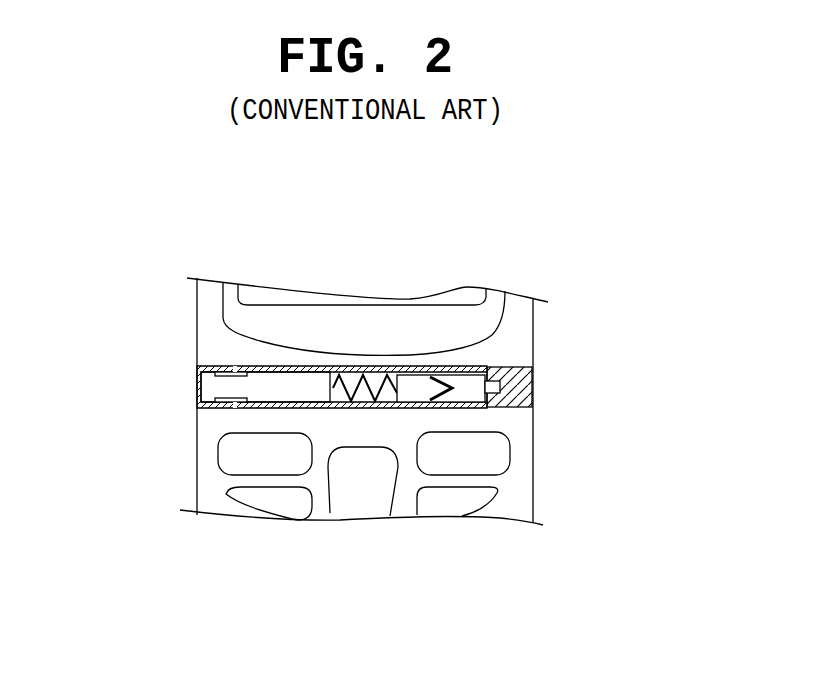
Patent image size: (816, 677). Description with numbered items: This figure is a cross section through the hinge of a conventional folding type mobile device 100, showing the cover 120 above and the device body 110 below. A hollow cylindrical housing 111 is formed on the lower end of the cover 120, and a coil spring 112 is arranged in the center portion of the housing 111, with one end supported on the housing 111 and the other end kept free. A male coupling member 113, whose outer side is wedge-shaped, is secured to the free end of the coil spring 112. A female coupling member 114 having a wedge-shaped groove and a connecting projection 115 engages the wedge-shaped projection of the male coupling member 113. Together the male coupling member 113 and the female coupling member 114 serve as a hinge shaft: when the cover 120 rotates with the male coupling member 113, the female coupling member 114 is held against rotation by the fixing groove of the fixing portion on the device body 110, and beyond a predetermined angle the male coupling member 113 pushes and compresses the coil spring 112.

The folding type mobile device 100 is at (534, 269).
The device body 110 is at (520, 498).
The hollow cylindrical housing 111 is at (336, 396).
The coil spring 112 is at (333, 388).
The male coupling member 113 is at (413, 378).
The female coupling member 114 is at (480, 368).
The connecting projection 115 is at (500, 387).
The cover 120 is at (203, 312).